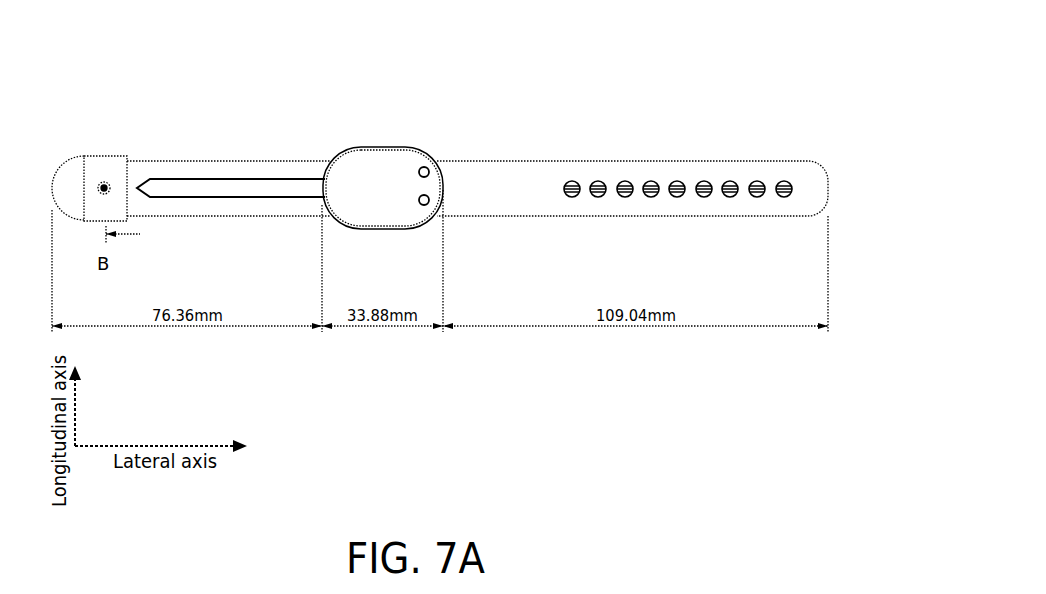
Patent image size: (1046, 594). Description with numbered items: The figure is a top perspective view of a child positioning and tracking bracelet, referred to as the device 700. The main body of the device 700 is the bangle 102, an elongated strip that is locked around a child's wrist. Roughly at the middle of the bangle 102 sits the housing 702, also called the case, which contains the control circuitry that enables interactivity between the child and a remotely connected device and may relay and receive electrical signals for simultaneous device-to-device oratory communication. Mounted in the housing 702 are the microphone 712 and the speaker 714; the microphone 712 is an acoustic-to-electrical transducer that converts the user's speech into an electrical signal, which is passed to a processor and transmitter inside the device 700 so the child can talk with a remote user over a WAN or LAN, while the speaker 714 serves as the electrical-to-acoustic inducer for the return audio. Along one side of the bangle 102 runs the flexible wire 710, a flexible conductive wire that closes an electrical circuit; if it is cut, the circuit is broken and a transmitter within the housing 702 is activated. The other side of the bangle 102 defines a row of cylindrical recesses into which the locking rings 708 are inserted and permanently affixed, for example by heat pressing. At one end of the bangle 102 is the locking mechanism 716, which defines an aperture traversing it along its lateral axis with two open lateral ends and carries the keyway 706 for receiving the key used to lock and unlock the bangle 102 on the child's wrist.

The bangle 102 is at (285, 160).
The housing 702 is at (358, 165).
The keyway 706 is at (100, 182).
The locking rings 708 is at (642, 182).
The flexible wire 710 is at (233, 197).
The microphone 712 is at (426, 205).
The speaker 714 is at (428, 176).
The locking mechanism 716 is at (113, 212).
The device 700 is at (664, 123).